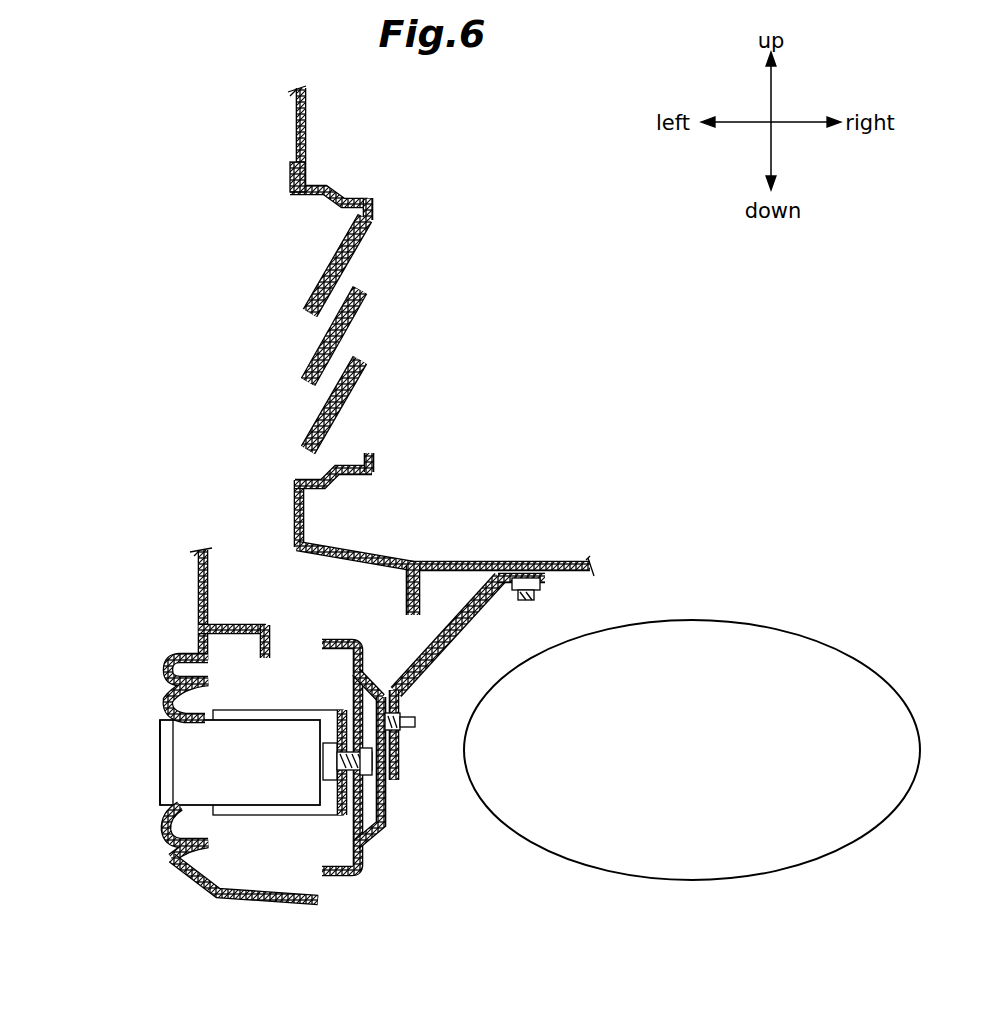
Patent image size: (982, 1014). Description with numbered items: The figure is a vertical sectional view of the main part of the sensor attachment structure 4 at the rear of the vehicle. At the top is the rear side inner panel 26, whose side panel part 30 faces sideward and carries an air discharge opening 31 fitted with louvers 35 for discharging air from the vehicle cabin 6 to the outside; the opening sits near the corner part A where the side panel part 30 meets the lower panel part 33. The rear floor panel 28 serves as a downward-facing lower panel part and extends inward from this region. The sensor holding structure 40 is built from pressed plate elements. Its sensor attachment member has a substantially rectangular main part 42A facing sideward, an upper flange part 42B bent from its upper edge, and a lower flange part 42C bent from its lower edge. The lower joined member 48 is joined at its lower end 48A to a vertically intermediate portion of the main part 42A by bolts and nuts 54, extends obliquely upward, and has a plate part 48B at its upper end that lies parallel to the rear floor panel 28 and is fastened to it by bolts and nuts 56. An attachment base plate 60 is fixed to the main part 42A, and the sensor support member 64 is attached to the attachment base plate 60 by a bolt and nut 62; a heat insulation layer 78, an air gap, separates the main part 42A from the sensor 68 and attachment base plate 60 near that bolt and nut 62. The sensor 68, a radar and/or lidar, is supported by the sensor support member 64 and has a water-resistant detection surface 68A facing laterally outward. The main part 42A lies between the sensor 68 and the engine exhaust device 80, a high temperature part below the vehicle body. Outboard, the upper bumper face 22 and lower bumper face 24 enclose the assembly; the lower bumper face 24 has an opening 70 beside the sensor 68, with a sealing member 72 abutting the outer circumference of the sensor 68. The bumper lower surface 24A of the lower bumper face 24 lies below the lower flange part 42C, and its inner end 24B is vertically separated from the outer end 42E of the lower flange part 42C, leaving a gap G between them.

The sensor attachment structure 4 is at (443, 894).
The vehicle cabin 6 is at (551, 312).
The upper bumper face 22 is at (196, 588).
The lower bumper face 24 is at (180, 865).
The bumper lower surface 24A is at (260, 905).
The inner end 24B is at (322, 904).
The rear side inner panel 26 is at (294, 127).
The rear floor panel 28 is at (563, 560).
The side panel part 30 is at (297, 527).
The air discharge opening 31 is at (362, 353).
The lower panel part 33 is at (312, 566).
The louvers 35 is at (312, 358).
The sensor holding structure 40 is at (294, 840).
The main part 42A is at (365, 848).
The upper flange part 42B is at (338, 640).
The lower flange part 42C is at (325, 870).
The outer end 42E is at (290, 898).
The lower joined member 48 is at (456, 634).
The lower end 48A is at (400, 742).
The plate part 48B is at (509, 568).
The bolts and nuts 54 is at (400, 714).
The bolts and nuts 56 is at (520, 600).
The attachment base plate 60 is at (385, 822).
The bolt and nut 62 is at (380, 788).
The sensor support member 64 is at (300, 710).
The sensor 68 is at (190, 786).
The detection surface 68A is at (160, 752).
The opening 70 is at (165, 700).
The sealing member 72 is at (165, 835).
The heat insulation layer 78 is at (370, 682).
The engine exhaust device 80 is at (735, 618).
The corner part A is at (296, 550).
The gap G is at (320, 888).